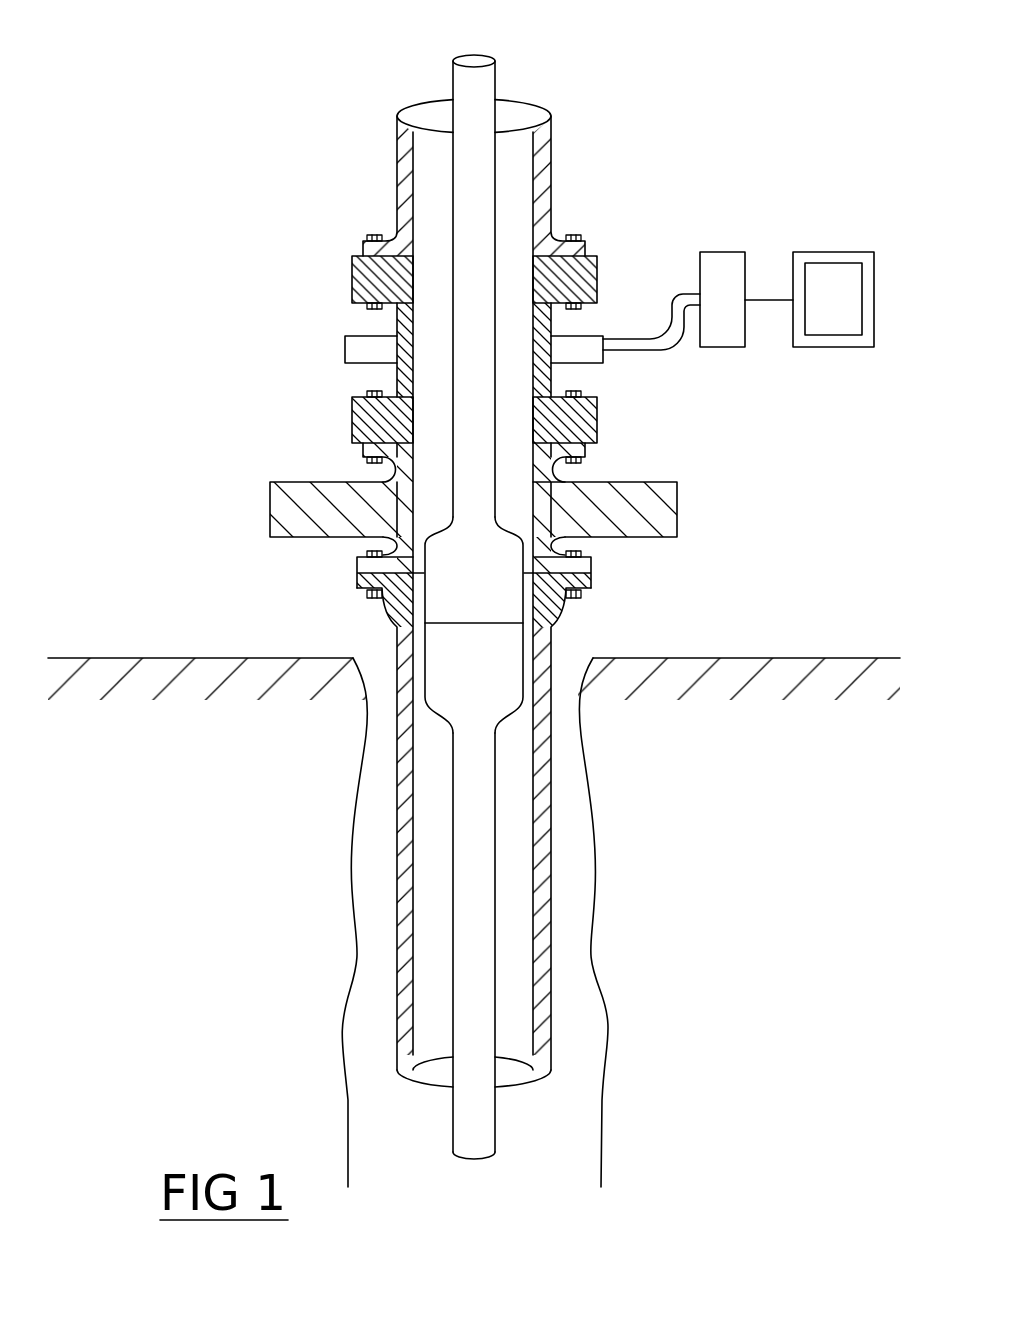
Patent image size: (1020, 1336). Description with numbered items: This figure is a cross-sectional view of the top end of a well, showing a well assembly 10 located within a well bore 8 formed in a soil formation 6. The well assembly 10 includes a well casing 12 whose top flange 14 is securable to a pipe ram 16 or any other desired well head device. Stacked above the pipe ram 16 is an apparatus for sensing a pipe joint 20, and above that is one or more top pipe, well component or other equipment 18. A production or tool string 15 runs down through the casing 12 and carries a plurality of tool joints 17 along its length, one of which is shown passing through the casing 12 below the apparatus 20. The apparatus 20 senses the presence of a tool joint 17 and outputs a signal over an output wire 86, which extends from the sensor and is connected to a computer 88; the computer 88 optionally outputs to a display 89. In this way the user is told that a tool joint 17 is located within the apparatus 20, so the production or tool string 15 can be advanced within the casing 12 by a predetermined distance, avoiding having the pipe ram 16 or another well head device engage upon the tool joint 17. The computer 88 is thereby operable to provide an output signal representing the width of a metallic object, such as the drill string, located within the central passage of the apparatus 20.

The soil formation 6 is at (825, 658).
The well bore 8 is at (572, 867).
The well assembly 10 is at (600, 118).
The well casing 12 is at (397, 633).
The top flange 14 is at (590, 567).
The production or tool string 15 is at (497, 63).
The pipe ram 16 is at (677, 498).
The tool joint 17 is at (447, 680).
The top pipe, well component or other equipment 18 is at (397, 172).
The apparatus for sensing a pipe joint 20 is at (346, 293).
The output wire 86 is at (650, 337).
The computer 88 is at (737, 312).
The display 89 is at (825, 252).